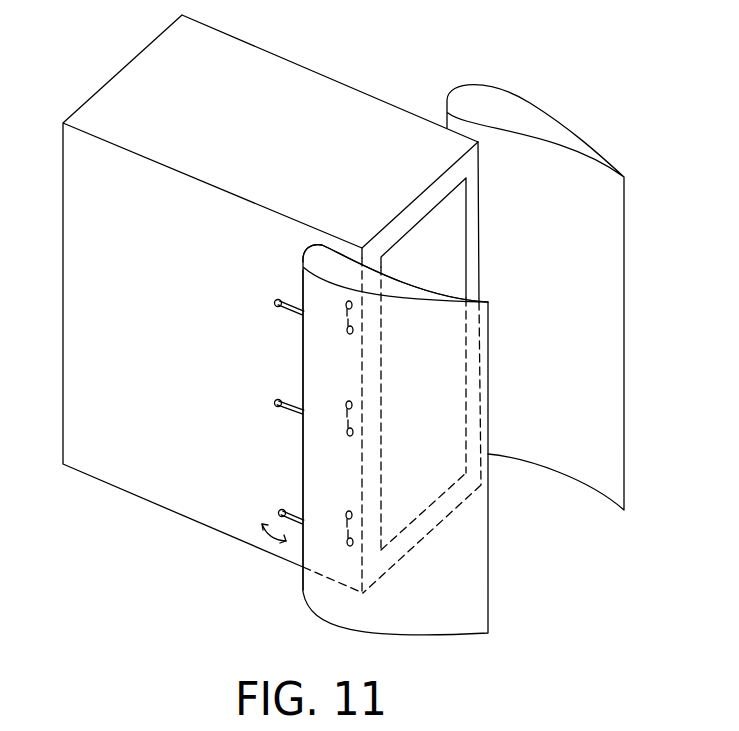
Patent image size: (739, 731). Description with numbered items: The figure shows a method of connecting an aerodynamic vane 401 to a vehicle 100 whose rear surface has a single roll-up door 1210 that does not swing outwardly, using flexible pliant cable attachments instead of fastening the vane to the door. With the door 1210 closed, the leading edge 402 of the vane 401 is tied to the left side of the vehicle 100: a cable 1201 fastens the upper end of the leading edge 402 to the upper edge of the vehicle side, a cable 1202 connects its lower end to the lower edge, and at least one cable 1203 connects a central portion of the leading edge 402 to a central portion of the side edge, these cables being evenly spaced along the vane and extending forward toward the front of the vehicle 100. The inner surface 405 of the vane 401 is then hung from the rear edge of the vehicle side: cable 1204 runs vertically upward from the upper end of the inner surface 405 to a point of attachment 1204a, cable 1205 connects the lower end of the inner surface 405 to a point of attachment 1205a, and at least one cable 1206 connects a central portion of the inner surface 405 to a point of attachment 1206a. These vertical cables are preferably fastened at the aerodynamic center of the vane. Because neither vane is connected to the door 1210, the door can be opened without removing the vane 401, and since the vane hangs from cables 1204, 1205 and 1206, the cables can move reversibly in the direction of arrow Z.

The vehicle 100 is at (272, 300).
The vane 401 is at (567, 128).
The leading edge 402 is at (303, 458).
The inner surface 405 is at (347, 256).
The door 1210 is at (412, 232).
The cable 1201 is at (280, 300).
The cable 1202 is at (288, 512).
The cable 1203 is at (280, 400).
The cable 1204 is at (347, 328).
The point of attachment 1204a is at (355, 306).
The cable 1205 is at (350, 534).
The point of attachment 1205a is at (352, 514).
The cable 1206 is at (347, 428).
The point of attachment 1206a is at (354, 408).
The arrow Z is at (270, 535).